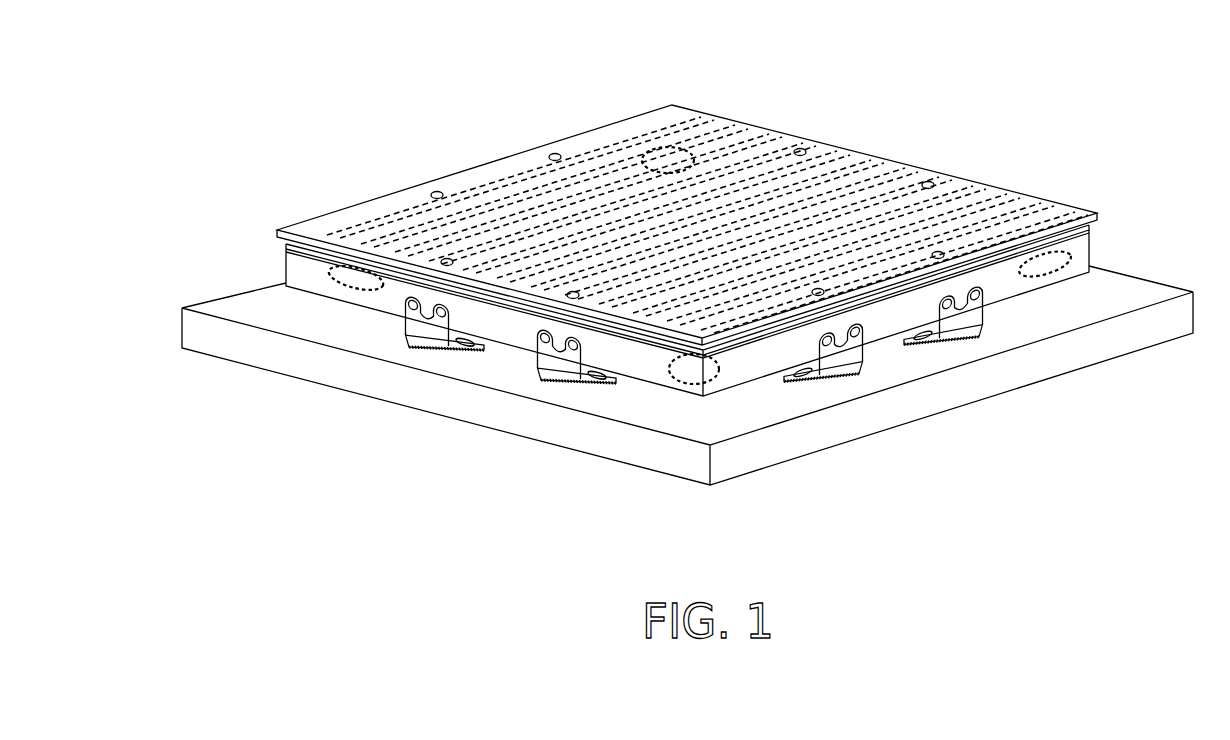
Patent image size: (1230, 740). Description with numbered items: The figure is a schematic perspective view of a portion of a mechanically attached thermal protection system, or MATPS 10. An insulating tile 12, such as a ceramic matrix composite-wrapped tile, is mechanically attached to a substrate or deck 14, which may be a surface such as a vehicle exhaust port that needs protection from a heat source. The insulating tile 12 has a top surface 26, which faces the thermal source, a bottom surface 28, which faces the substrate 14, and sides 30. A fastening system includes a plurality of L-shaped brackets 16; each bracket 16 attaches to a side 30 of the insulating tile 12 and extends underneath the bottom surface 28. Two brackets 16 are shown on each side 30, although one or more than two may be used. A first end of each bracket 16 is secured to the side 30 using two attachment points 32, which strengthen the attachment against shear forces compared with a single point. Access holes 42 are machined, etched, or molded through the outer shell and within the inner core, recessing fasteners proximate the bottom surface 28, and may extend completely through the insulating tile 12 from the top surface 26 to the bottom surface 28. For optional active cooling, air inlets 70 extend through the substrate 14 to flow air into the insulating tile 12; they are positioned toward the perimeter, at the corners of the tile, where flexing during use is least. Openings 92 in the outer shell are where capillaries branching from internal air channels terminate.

The MATPS 10 is at (405, 95).
The insulating tile 12 is at (687, 203).
The substrate 14 is at (1147, 288).
The bracket 16 is at (427, 325).
The top surface 26 is at (830, 160).
The bottom surface 28 is at (1070, 289).
The side 30 is at (1090, 241).
The attachment point 32 is at (410, 307).
The access hole 42 is at (553, 150).
The air inlet 70 is at (675, 144).
The opening 92 is at (768, 143).